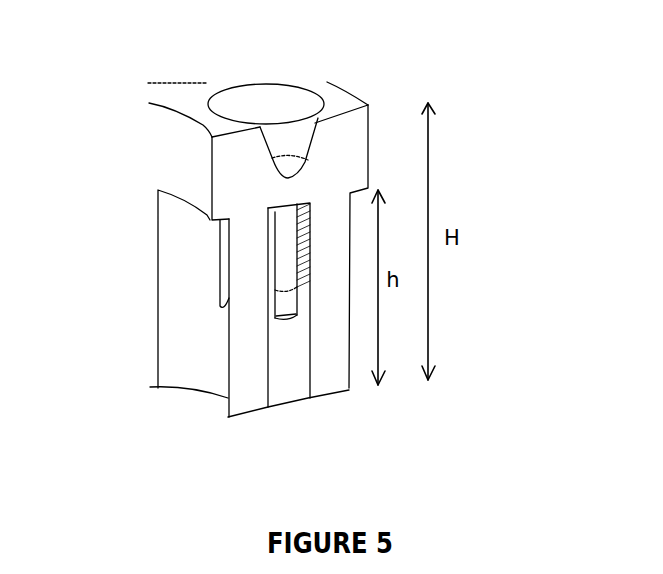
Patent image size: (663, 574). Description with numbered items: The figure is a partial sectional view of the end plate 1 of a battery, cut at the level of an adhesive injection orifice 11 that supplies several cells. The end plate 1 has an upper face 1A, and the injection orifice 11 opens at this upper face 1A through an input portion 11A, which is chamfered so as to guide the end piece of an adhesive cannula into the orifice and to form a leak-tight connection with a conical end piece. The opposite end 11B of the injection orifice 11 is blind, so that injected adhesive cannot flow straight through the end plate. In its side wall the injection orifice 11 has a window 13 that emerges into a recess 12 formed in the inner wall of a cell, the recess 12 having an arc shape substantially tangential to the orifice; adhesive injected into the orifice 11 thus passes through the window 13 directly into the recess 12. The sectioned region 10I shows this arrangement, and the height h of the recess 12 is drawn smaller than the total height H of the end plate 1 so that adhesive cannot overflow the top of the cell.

The end plate 1 is at (118, 98).
The top surface 10I is at (173, 137).
The upper face 1A is at (180, 100).
The injection orifice 11 is at (288, 100).
The input portion 11A is at (315, 124).
The end of the injection orifice 11B is at (288, 318).
The recess 12 is at (195, 368).
The window 13 is at (220, 257).